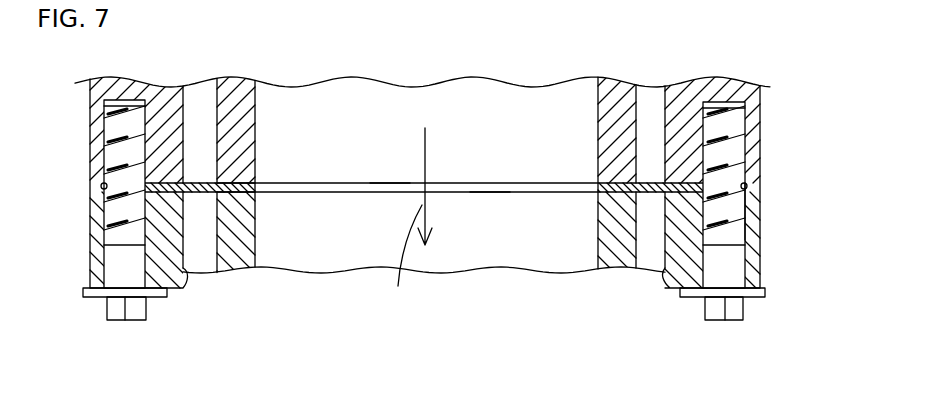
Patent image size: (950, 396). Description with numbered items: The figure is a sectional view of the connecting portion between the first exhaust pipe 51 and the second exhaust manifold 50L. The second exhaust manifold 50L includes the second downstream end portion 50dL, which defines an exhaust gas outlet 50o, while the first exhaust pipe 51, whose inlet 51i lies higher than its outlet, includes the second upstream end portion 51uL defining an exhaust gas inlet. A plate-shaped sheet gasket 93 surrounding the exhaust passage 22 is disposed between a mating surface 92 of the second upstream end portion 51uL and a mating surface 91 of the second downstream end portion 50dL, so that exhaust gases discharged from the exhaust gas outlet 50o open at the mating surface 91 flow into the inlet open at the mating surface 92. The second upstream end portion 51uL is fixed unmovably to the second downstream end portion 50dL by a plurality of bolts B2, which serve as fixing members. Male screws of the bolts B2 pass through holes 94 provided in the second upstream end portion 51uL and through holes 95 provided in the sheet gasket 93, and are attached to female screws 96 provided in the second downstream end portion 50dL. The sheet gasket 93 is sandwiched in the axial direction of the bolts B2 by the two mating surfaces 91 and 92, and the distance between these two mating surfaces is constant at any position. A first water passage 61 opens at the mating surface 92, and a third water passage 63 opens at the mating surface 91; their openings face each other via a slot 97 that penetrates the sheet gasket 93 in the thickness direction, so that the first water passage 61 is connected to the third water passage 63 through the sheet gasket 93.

The exhaust passage 22 is at (493, 121).
The third water passage 63 is at (200, 90).
The first water passage 61 is at (202, 258).
The first exhaust pipe 51 is at (98, 204).
The inlet of the first exhaust pipe 51i is at (390, 188).
The second upstream end portion 51uL is at (752, 202).
The second exhaust manifold 50L is at (100, 114).
The second downstream end portion 50dL is at (750, 120).
The exhaust gas outlet 50o is at (488, 184).
The holes 94 is at (105, 222).
The holes 95 is at (104, 184).
The female screws 96 is at (108, 145).
The slot 97 is at (193, 185).
The mating surface of the second downstream end portion 91 is at (230, 195).
The mating surface of the second upstream end portion 92 is at (236, 193).
The sheet gasket 93 is at (608, 190).
The bolts B2 is at (117, 318).